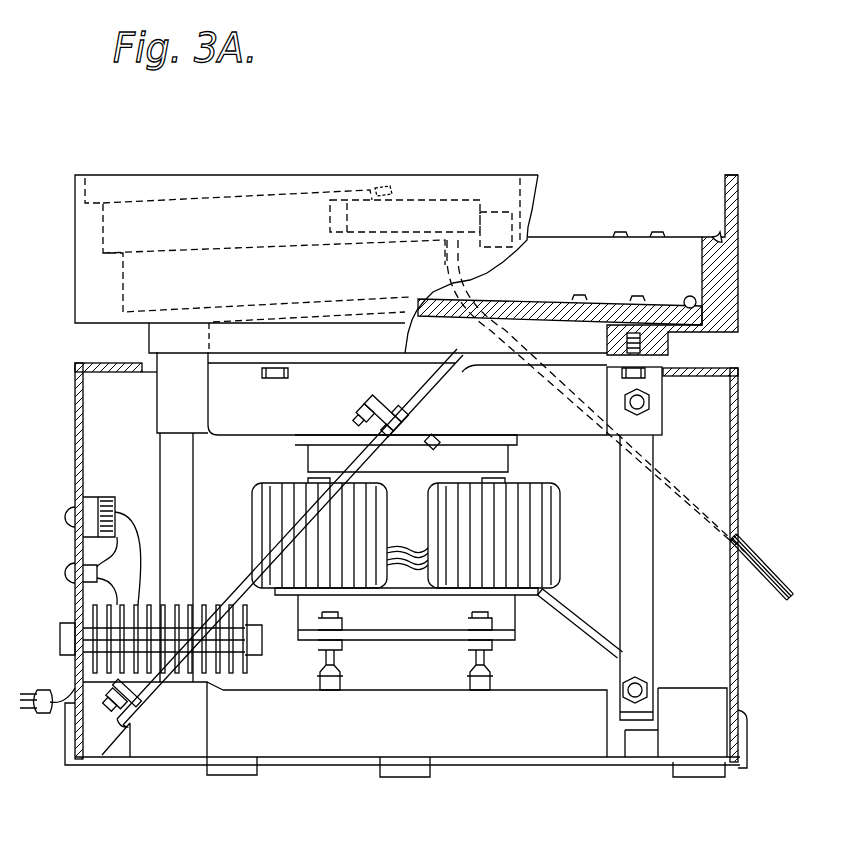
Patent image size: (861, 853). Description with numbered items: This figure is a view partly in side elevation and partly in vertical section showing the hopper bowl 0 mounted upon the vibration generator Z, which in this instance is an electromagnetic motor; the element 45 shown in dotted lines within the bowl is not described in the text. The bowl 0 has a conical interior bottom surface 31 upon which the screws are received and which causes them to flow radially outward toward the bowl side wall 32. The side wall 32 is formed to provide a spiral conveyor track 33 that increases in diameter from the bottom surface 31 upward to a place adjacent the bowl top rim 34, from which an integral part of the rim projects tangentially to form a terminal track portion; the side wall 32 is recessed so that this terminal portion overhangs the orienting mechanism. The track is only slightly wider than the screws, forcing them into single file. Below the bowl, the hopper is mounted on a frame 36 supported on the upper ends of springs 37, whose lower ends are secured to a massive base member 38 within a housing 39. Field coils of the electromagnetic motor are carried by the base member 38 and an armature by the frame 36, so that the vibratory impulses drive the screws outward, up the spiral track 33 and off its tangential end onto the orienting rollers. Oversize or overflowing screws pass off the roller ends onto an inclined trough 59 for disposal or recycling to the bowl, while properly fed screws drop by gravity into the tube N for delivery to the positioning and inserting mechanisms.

The hopper bowl 0 is at (298, 173).
The element inside hopper 45 is at (443, 197).
The inclined trough 59 is at (533, 226).
The conical interior bottom surface 31 is at (533, 303).
The bowl side wall 32 is at (736, 282).
The bowl top rim 34 is at (738, 180).
The spiral conveyor track 33 is at (716, 236).
The housing 39 is at (738, 418).
The base member 38 is at (525, 748).
The frame 36 is at (568, 430).
The springs 37 is at (183, 488).
The tube N is at (763, 560).
The vibration generator Z is at (748, 661).